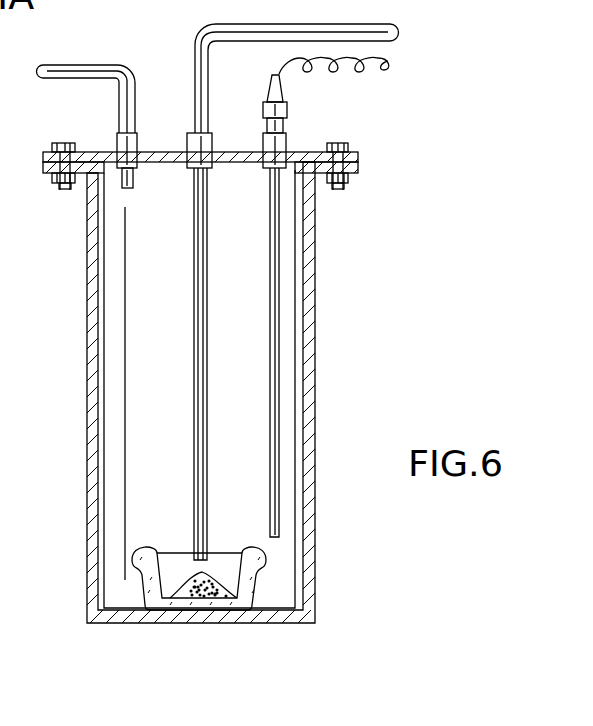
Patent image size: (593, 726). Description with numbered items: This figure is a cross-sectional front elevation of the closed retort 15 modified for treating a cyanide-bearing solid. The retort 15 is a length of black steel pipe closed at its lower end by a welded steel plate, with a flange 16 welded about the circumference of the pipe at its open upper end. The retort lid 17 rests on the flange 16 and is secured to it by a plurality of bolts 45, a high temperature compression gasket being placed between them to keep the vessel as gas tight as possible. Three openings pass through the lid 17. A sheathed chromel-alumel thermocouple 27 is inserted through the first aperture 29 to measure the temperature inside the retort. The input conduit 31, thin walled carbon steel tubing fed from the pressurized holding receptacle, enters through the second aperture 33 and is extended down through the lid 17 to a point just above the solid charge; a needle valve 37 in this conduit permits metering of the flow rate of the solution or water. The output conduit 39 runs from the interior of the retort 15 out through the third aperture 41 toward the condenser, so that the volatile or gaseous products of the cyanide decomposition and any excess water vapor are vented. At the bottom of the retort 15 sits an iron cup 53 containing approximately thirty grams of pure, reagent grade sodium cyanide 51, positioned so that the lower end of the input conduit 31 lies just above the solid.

The closed retort 15 is at (315, 370).
The flange 16 is at (358, 168).
The retort lid 17 is at (100, 152).
The thermocouple 27 is at (270, 297).
The first aperture 29 is at (287, 143).
The input conduit 31 is at (194, 413).
The second aperture 33 is at (212, 147).
The needle valve 37 is at (238, 23).
The output conduit 39 is at (108, 65).
The third aperture 41 is at (138, 150).
The bolts 45 is at (347, 143).
The sodium cyanide 51 is at (220, 577).
The iron cup 53 is at (167, 550).